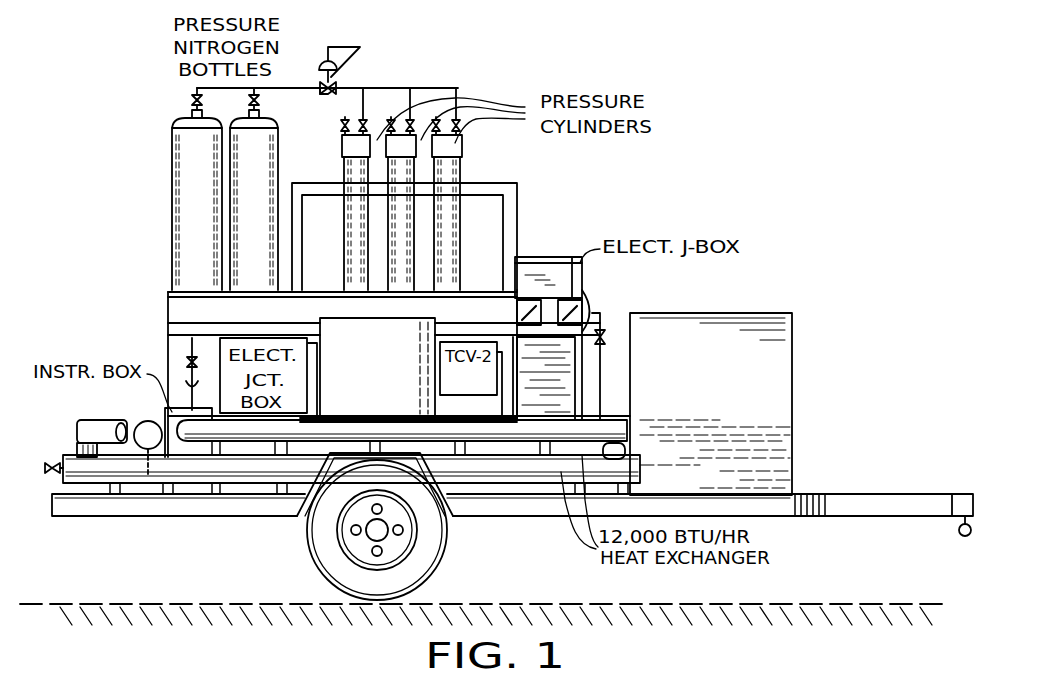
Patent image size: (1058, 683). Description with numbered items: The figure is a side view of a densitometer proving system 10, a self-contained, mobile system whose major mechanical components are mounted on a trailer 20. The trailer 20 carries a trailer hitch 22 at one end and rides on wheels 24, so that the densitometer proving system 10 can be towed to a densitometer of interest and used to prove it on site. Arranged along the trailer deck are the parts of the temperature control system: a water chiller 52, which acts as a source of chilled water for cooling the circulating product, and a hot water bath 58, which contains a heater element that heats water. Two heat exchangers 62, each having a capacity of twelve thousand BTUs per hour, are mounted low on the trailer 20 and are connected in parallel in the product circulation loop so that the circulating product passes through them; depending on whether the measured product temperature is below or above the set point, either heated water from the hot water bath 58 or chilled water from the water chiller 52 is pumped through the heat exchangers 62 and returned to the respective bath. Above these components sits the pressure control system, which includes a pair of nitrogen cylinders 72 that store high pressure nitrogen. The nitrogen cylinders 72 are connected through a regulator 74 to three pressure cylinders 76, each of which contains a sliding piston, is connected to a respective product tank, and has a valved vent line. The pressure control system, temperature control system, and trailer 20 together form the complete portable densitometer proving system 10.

The densitometer proving system 10 is at (727, 126).
The trailer 20 is at (170, 507).
The trailer hitch 22 is at (883, 503).
The wheels 24 is at (437, 556).
The water chiller 52 is at (721, 410).
The hot water bath 58 is at (387, 392).
The heat exchangers 62 is at (608, 432).
The nitrogen cylinders 72 is at (208, 233).
The regulator 74 is at (348, 45).
The pressure cylinders 76 is at (366, 233).